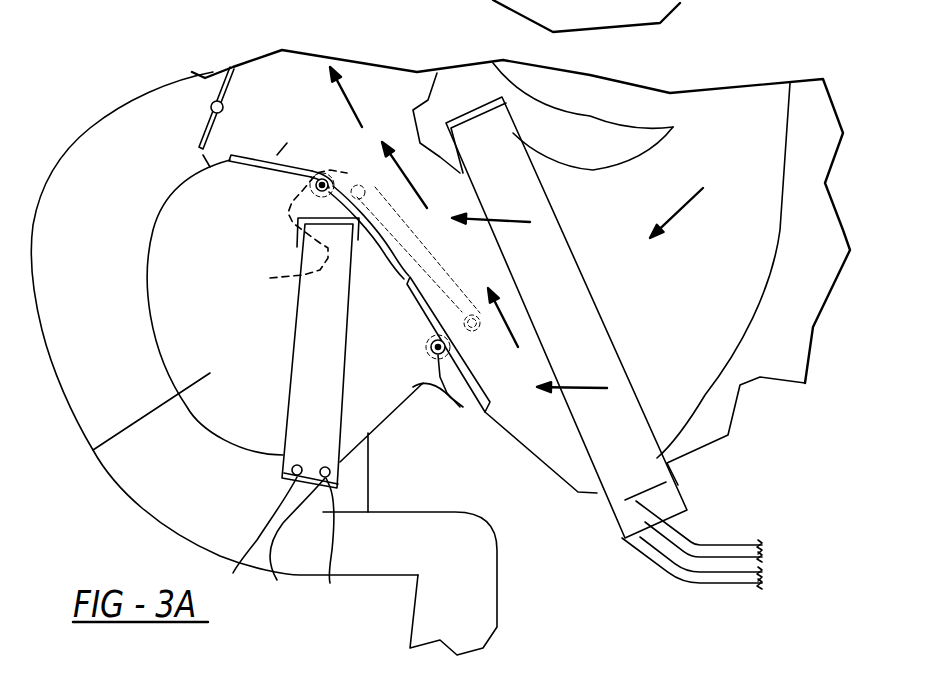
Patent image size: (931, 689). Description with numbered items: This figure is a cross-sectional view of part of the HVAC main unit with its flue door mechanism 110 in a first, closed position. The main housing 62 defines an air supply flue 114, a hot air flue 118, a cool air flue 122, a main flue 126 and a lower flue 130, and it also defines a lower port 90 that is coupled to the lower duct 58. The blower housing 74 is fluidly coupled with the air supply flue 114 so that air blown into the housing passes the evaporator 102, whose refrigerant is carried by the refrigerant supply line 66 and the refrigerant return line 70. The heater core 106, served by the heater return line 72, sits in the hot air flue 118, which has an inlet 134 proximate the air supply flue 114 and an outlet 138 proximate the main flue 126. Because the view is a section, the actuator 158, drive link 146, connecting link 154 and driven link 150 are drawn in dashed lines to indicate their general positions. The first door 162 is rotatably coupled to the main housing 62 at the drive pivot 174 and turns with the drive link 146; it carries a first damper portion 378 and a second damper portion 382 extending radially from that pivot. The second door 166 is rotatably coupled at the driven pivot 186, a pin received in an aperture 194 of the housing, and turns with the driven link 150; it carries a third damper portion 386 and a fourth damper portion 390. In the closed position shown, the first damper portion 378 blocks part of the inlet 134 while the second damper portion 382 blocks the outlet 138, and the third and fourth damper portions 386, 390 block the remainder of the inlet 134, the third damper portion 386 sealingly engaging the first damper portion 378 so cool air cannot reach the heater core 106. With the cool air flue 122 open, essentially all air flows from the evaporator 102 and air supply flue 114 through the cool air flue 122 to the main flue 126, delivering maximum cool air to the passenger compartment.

The lower duct 58 is at (497, 627).
The main housing 62 is at (108, 112).
The refrigerant supply line 66 is at (735, 543).
The refrigerant return line 70 is at (727, 587).
The heater return line 72 is at (261, 540).
The blower housing 74 is at (622, 108).
The lower port 90 is at (460, 587).
The evaporator 102 is at (600, 493).
The heater core 106 is at (294, 547).
The flue door mechanism 110 is at (420, 387).
The air supply flue 114 is at (747, 220).
The hot air flue 118 is at (100, 440).
The cool air flue 122 is at (412, 133).
The main flue 126 is at (375, 80).
The lower flue 130 is at (100, 205).
The inlet 134 is at (194, 92).
The outlet 138 is at (263, 173).
The drive link 146 is at (345, 178).
The driven link 150 is at (463, 350).
The connecting link 154 is at (437, 266).
The actuator 158 is at (303, 275).
The first door 162 is at (277, 160).
The second door 166 is at (467, 380).
The drive pivot 174 is at (330, 172).
The driven pivot 186 is at (460, 407).
The aperture 194 is at (697, 3).
The first damper portion 378 is at (387, 245).
The second damper portion 382 is at (292, 157).
The third damper portion 386 is at (415, 304).
The fourth damper portion 390 is at (492, 402).